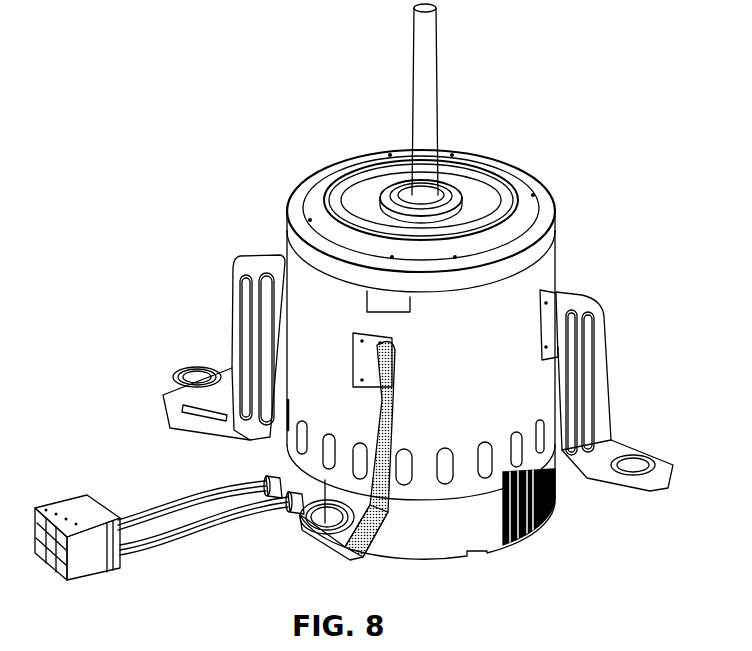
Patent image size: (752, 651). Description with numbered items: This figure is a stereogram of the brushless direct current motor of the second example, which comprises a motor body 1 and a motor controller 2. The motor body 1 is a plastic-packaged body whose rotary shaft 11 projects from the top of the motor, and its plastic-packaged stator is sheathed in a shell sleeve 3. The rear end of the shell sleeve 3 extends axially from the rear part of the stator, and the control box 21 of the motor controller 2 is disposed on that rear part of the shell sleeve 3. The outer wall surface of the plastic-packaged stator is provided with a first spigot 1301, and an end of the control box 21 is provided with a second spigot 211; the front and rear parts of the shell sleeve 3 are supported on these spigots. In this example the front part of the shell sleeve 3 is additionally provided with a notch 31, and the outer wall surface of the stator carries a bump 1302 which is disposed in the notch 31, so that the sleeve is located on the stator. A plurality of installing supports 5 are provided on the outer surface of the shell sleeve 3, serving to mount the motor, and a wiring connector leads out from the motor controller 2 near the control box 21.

The motor body 1 is at (532, 172).
The rotary shaft 11 is at (425, 85).
The first spigot 1301 is at (463, 288).
The bump 1302 is at (383, 302).
The motor controller 2 is at (552, 520).
The control box 21 is at (422, 533).
The second spigot 211 is at (477, 498).
The shell sleeve 3 is at (500, 333).
The notch 31 is at (378, 310).
The installing support 5 is at (585, 380).